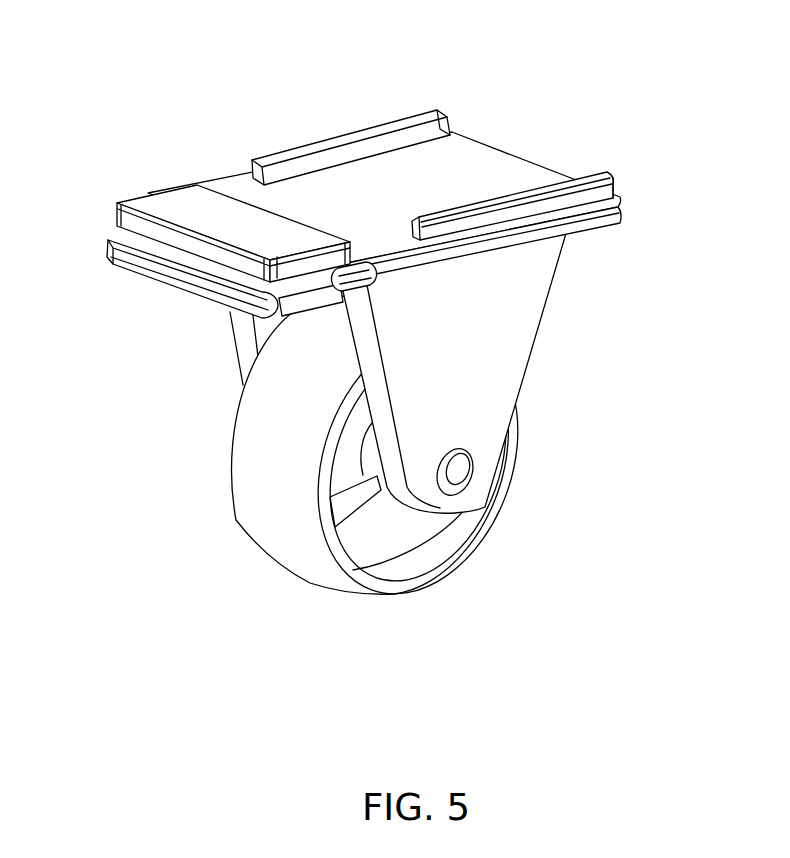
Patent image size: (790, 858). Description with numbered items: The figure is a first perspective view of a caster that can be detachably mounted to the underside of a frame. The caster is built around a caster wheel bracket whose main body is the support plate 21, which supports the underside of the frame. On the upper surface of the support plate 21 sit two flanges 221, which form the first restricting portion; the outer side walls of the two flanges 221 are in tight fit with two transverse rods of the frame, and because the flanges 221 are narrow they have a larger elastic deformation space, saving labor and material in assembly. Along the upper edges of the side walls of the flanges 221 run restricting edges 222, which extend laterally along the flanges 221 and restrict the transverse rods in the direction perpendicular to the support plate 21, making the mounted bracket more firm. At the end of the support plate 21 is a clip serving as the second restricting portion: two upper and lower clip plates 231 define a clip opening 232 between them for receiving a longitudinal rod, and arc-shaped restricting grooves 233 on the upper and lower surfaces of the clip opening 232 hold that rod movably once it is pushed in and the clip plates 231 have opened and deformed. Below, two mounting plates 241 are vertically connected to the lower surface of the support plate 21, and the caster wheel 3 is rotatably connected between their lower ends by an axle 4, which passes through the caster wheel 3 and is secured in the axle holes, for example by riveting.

The support plate 21 is at (540, 238).
The flanges 221 is at (440, 132).
The restricting edges 222 is at (607, 193).
The clip plates 231 is at (177, 210).
The clip opening 232 is at (260, 294).
The restricting grooves 233 is at (197, 261).
The mounting plates 241 is at (411, 426).
The caster wheel 3 is at (257, 518).
The axle 4 is at (455, 477).